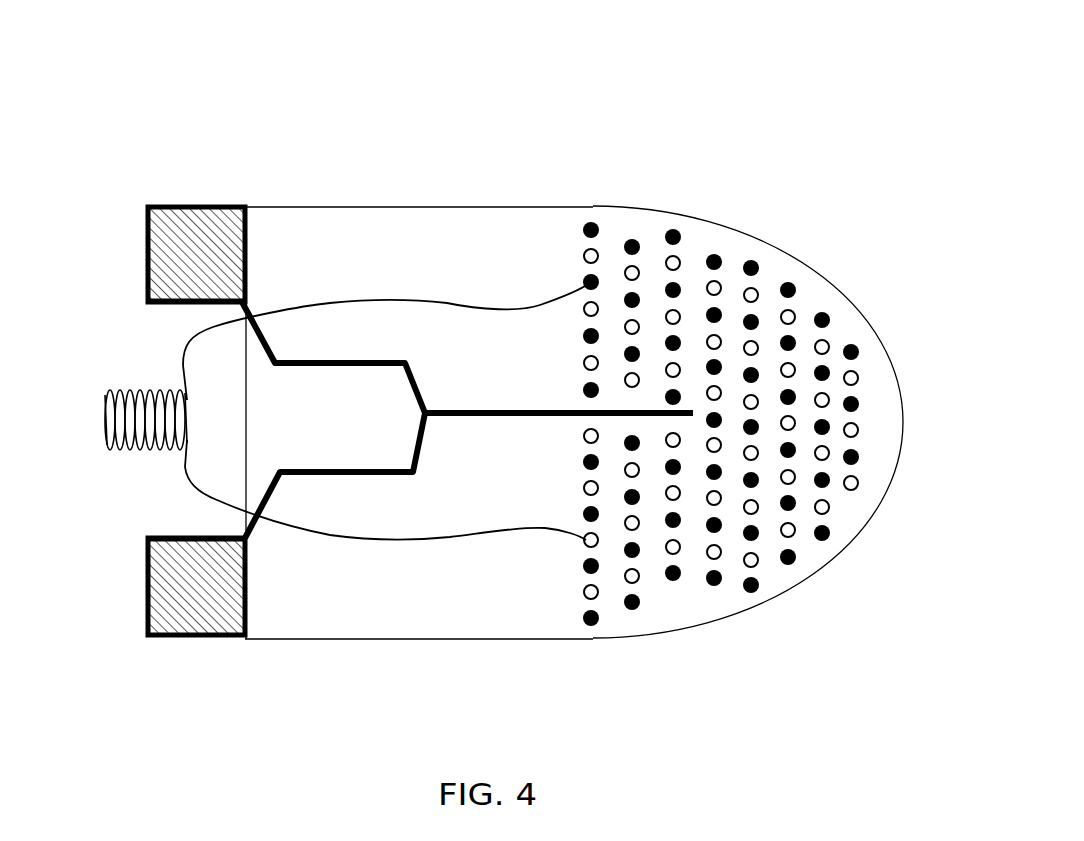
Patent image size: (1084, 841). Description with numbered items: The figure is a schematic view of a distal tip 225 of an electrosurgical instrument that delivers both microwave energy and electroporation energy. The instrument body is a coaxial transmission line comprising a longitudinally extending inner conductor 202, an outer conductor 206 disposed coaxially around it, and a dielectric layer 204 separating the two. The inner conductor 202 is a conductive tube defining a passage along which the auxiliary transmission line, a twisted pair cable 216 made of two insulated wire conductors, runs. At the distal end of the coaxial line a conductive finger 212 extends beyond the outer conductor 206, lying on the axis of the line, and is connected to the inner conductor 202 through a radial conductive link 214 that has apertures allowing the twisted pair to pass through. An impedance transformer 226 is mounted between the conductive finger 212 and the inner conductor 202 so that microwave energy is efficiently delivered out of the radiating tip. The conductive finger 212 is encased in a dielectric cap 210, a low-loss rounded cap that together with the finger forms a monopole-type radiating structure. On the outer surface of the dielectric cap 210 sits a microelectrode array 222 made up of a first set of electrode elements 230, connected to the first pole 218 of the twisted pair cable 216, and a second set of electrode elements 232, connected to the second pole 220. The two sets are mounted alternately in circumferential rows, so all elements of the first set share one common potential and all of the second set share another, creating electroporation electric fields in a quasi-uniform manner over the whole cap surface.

The inner conductor 202 is at (220, 290).
The dielectric layer 204 is at (187, 257).
The outer conductor 206 is at (163, 203).
The dielectric cap 210 is at (370, 630).
The conductive finger 212 is at (493, 410).
The radial conductive link 214 is at (250, 313).
The twisted pair cable 216 is at (125, 450).
The first pole (conductor) 218 is at (465, 307).
The second pole (conductor) 220 is at (472, 535).
The microelectrode array 222 is at (869, 270).
The distal tip 225 is at (243, 684).
The impedance transformer 226 is at (363, 360).
The first set of electrode elements 230 is at (790, 282).
The second set of electrode elements 232 is at (853, 490).